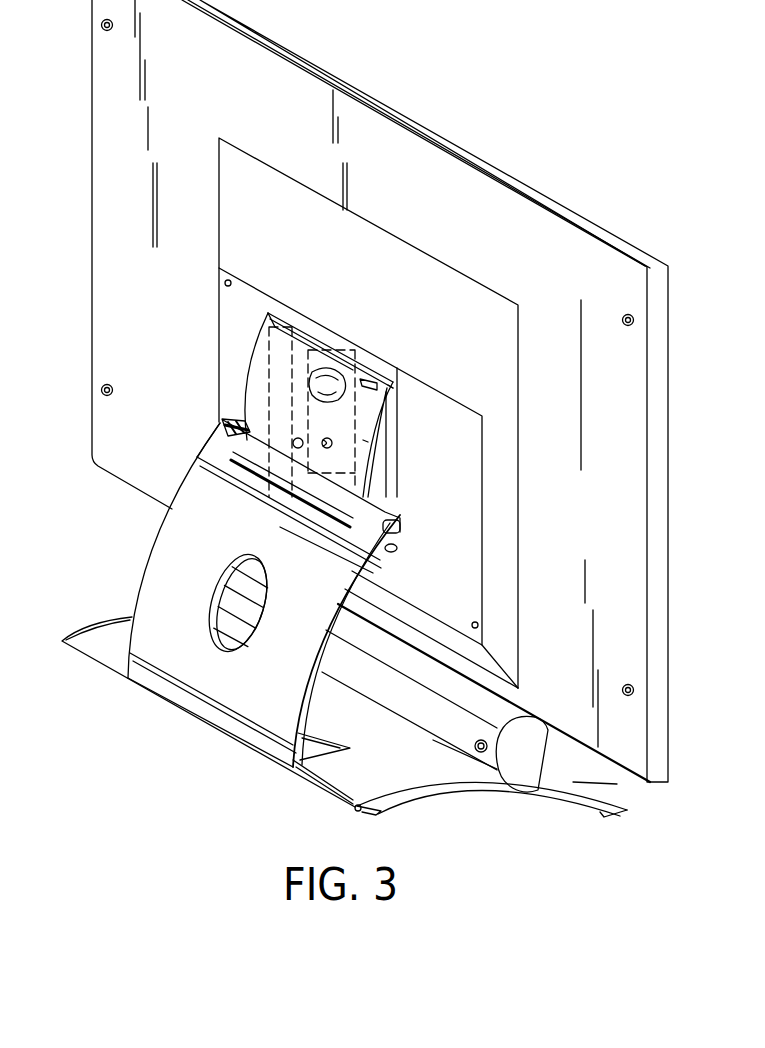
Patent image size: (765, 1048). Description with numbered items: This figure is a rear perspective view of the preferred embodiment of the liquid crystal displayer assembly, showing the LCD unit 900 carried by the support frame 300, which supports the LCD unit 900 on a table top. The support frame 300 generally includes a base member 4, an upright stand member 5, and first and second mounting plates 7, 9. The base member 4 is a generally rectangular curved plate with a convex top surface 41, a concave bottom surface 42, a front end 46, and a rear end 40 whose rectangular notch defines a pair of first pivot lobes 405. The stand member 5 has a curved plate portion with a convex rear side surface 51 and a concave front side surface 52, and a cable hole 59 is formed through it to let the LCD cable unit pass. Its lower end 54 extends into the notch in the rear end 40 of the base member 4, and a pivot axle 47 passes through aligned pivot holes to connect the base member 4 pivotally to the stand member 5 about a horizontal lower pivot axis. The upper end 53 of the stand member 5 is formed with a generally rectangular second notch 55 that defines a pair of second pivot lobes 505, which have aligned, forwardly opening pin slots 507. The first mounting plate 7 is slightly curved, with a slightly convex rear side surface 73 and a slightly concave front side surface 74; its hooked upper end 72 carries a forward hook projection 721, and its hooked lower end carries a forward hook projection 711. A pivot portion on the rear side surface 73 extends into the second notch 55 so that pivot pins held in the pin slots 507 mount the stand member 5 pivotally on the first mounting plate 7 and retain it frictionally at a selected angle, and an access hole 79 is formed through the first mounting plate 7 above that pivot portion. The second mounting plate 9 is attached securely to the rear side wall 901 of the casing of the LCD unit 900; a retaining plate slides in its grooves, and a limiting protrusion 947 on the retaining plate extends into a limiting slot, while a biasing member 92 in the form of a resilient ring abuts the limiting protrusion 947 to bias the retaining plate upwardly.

The liquid crystal displayer unit 900 is at (420, 128).
The rear side wall 901 is at (288, 100).
The first mounting plate 7 is at (232, 349).
The rear side surface 73 is at (262, 316).
The hooked upper end 72 is at (302, 327).
The forward hook projection 721 is at (394, 389).
The front side surface 74 is at (367, 441).
The second mounting plate 9 is at (395, 472).
The biasing member 92 is at (377, 370).
The limiting protrusion 947 is at (336, 355).
The access hole 79 is at (293, 443).
The stand member 5 is at (135, 550).
The rear side surface 51 is at (167, 586).
The front side surface 52 is at (323, 688).
The upper end 53 is at (227, 482).
The lower end 54 is at (190, 709).
The second notch 55 is at (294, 495).
The cable hole 59 is at (212, 632).
The second pivot lobes 505 is at (222, 423).
The pin slots 507 is at (400, 526).
The forward hook projection 711 is at (398, 548).
The base member 4 is at (505, 810).
The rear end 40 is at (338, 803).
The first pivot lobes 405 is at (102, 655).
The top surface 41 is at (437, 780).
The bottom surface 42 is at (524, 797).
The front end 46 is at (580, 783).
The pivot axle 47 is at (364, 812).
The support frame 300 is at (100, 598).